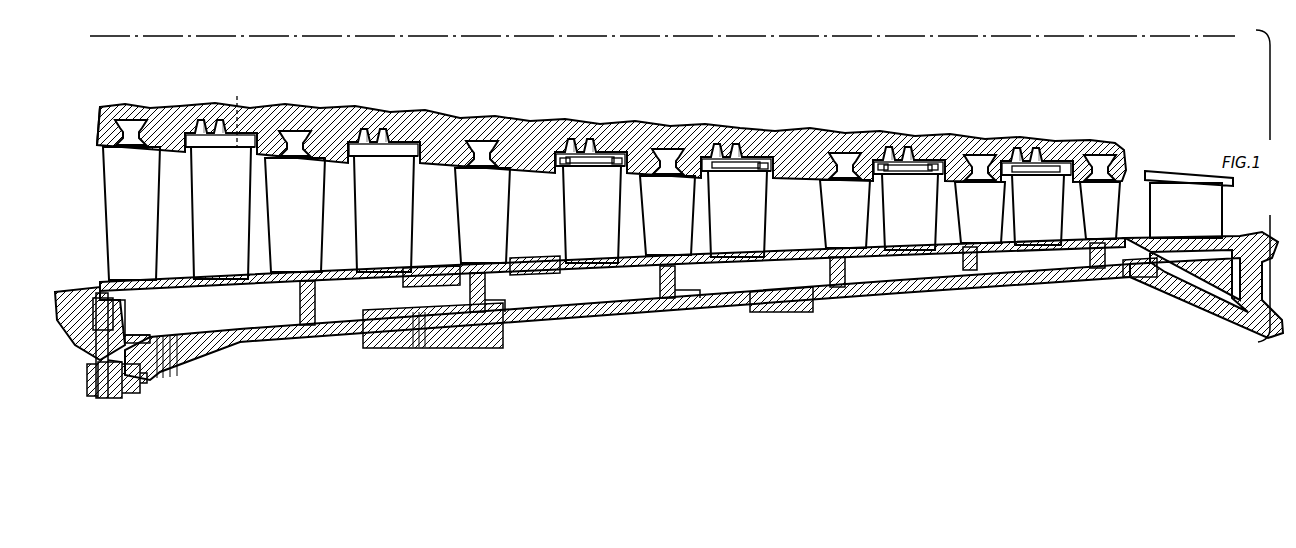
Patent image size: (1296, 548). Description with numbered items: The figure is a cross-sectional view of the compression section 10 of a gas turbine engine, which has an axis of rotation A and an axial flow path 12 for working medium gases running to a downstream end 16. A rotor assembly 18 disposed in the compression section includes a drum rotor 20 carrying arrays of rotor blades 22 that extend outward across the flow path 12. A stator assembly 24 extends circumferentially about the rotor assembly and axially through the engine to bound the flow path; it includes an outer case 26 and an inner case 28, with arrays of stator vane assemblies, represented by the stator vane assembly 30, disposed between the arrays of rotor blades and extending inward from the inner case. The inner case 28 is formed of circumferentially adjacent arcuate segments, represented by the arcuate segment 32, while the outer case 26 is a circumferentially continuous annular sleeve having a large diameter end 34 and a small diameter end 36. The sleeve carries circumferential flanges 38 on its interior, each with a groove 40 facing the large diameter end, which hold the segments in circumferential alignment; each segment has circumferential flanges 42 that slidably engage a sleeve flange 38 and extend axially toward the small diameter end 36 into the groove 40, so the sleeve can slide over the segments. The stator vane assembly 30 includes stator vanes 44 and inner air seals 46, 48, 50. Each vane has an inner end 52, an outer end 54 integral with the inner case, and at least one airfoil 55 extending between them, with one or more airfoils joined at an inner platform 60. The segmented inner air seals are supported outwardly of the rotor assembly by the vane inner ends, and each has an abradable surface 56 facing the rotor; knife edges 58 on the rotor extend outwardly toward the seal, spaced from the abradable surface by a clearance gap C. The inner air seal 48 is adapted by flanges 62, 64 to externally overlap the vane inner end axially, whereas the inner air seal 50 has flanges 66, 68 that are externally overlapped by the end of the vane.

The axis of rotation A is at (868, 36).
The compression section 10 is at (116, 100).
The axial flow path 12 is at (102, 212).
The downstream end 16 is at (1147, 217).
The rotor assembly 18 is at (92, 138).
The drum rotor 20 is at (297, 120).
The rotor blades 22 is at (143, 217).
The stator assembly 24 is at (96, 398).
The outer case 26 is at (246, 332).
The inner case 28 is at (350, 280).
The stator vane assembly 30 is at (258, 218).
The arcuate segment 32 is at (538, 279).
The large diameter end 34 is at (92, 360).
The small diameter end 36 is at (1093, 280).
The flanges 38 is at (497, 298).
The groove 40 is at (495, 318).
The circumferential flanges 42 is at (313, 293).
The stator vanes 44 is at (198, 212).
The inner air seal 46 is at (222, 148).
The inner air seal 48 is at (600, 154).
The inner air seal 50 is at (904, 162).
The inner end 52 is at (192, 158).
The outer end 54 is at (208, 277).
The airfoil 55 is at (231, 217).
The abradable surface 56 is at (397, 145).
The knife edges 58 is at (383, 126).
The inner platform 60 is at (394, 158).
The flange 62 is at (560, 162).
The flange 64 is at (628, 152).
The flange 66 is at (886, 172).
The flange 68 is at (932, 172).
The clearance gap C is at (235, 111).